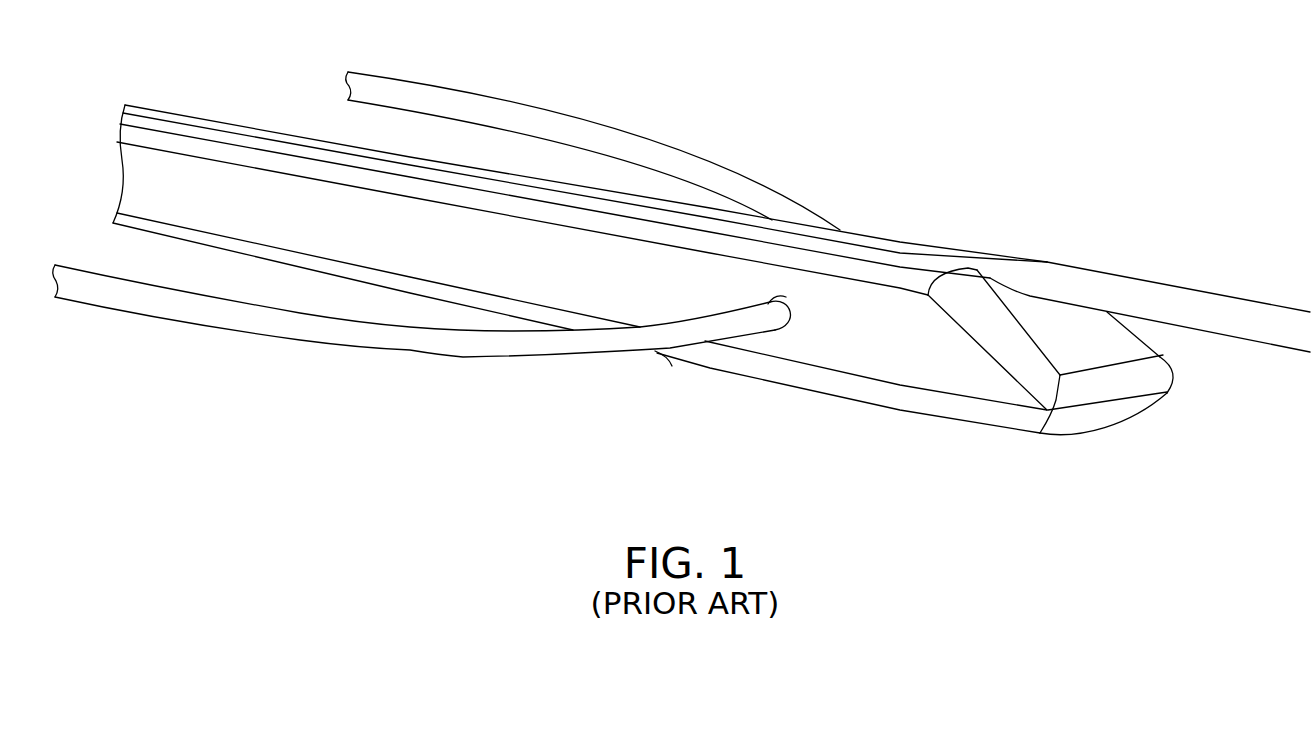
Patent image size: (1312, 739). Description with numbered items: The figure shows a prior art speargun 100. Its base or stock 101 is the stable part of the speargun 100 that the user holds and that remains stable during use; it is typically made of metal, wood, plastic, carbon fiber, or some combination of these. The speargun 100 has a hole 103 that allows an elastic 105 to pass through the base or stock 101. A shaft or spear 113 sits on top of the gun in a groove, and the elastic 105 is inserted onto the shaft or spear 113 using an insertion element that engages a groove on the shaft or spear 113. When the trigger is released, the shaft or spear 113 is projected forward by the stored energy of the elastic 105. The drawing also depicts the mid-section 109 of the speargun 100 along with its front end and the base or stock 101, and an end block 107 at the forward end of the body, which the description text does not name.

The speargun 100 is at (270, 396).
The base or stock 101 is at (238, 272).
The hole 103 is at (785, 335).
The elastic 105 is at (490, 97).
The end block / connector 107 is at (1137, 348).
The mid-section 109 is at (207, 192).
The shaft or spear 113 is at (1248, 300).